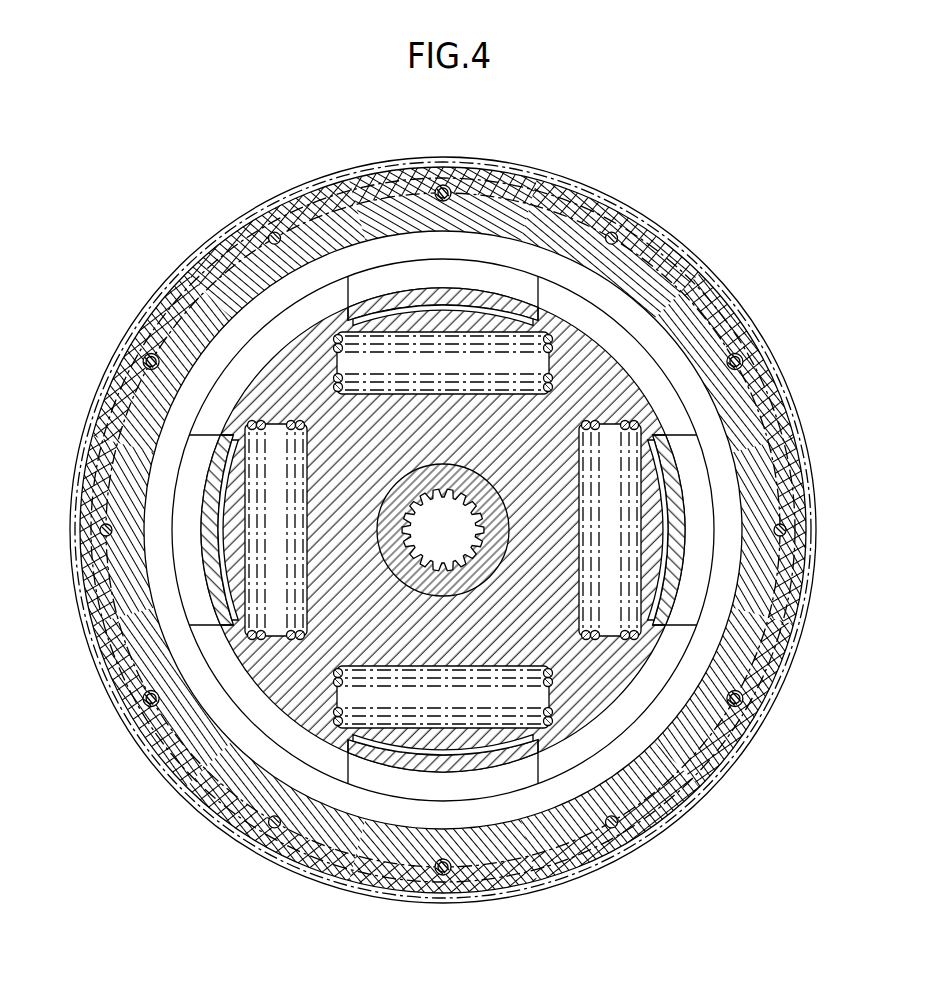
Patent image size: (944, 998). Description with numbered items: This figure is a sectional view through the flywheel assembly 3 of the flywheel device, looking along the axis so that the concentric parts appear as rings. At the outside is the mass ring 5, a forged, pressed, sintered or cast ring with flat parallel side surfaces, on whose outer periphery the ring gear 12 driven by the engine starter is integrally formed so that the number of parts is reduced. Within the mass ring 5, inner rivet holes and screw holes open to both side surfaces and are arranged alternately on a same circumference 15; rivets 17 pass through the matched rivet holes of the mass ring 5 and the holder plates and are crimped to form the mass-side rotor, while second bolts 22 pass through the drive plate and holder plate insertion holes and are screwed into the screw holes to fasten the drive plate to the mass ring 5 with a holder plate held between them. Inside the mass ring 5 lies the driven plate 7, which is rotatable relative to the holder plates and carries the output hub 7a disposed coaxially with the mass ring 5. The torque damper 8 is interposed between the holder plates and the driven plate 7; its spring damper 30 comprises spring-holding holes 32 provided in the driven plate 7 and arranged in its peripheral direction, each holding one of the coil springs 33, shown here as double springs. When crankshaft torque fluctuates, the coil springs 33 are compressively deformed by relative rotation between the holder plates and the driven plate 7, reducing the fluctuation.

The flywheel assembly 3 is at (609, 177).
The mass ring 5 is at (680, 298).
The driven plate 7 is at (578, 343).
The output hub 7a is at (495, 569).
The torque damper 8 is at (436, 322).
The spring damper 30 is at (443, 496).
The ring gear 12 is at (505, 150).
The same circumference 15 is at (333, 207).
The rivets 17 is at (268, 238).
The second bolts 22 is at (443, 185).
The spring-holding holes 32 is at (455, 394).
The coil springs 33 is at (413, 379).